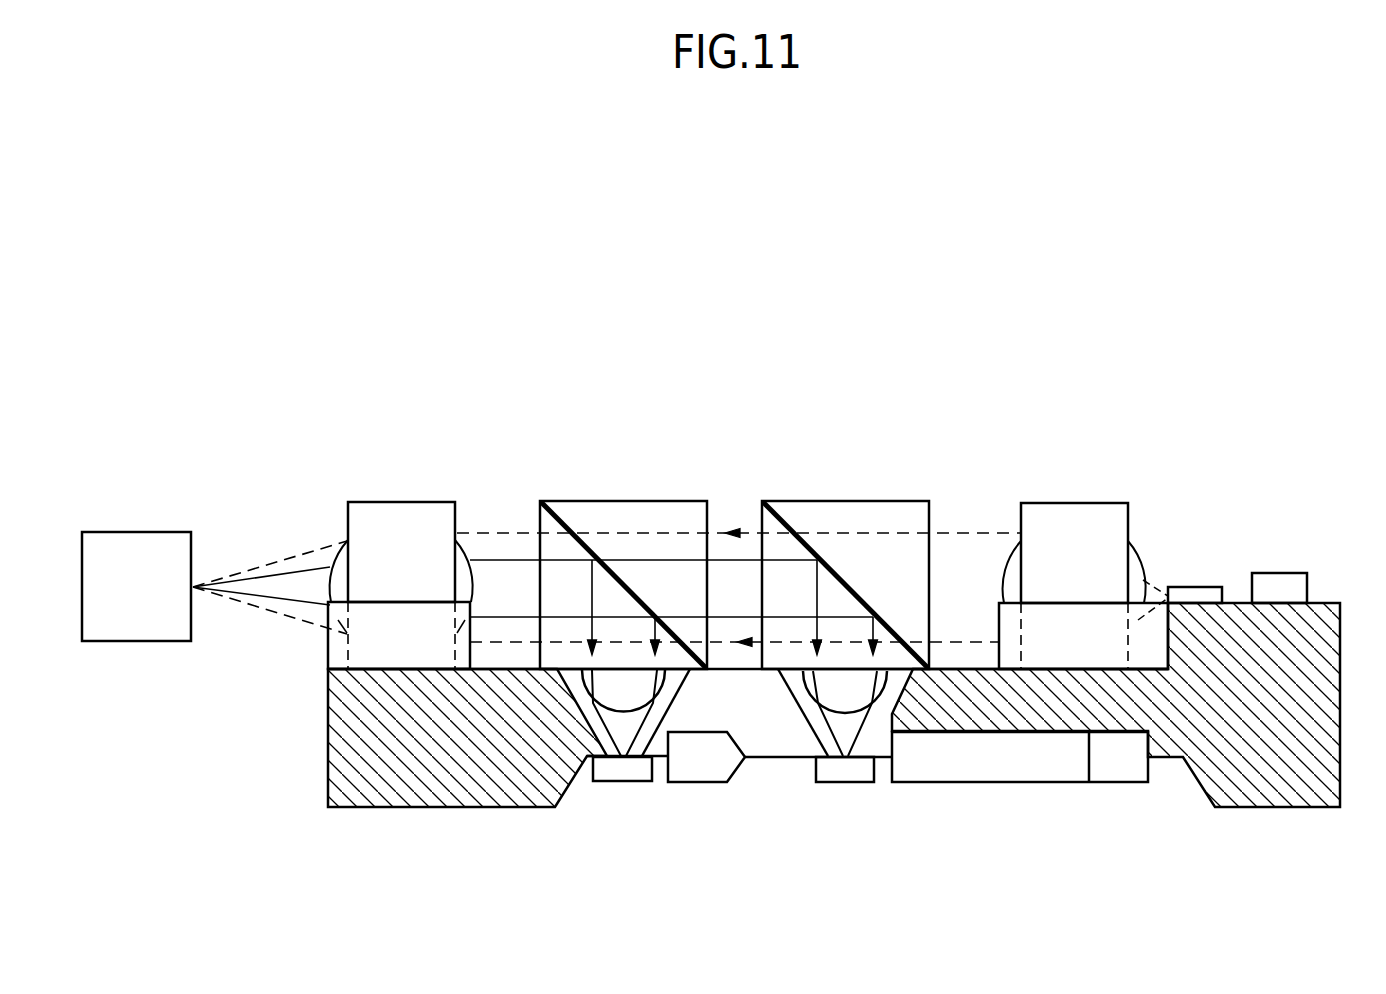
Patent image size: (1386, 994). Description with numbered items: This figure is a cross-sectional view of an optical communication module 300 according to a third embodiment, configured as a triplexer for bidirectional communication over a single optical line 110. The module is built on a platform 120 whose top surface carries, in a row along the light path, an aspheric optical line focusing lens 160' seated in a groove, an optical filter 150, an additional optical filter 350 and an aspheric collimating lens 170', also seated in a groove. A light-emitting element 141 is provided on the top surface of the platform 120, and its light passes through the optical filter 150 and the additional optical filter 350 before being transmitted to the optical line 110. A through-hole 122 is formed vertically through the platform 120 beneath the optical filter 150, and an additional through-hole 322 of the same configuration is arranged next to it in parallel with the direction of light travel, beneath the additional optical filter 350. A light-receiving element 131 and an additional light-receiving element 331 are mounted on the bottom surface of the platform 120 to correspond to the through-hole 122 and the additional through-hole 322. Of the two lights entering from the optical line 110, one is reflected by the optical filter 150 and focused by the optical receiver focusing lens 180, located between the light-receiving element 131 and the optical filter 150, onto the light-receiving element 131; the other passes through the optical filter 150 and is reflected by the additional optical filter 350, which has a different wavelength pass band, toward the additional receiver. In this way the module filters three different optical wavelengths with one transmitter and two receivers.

The optical communication module 300 is at (223, 405).
The optical line 110 is at (122, 643).
The optical line focusing lens 160' is at (409, 538).
The optical filter 150 is at (680, 485).
The additional optical filter 350 is at (910, 488).
The collimating lens 170' is at (1088, 539).
The light-emitting element 141 is at (1200, 587).
The platform 120 is at (1310, 845).
The optical receiver focusing lens 180 is at (570, 697).
The through-hole 122 is at (615, 783).
The light-receiving element 131 is at (647, 783).
The additional through-hole 322 is at (842, 783).
The additional light-receiving element 331 is at (873, 783).